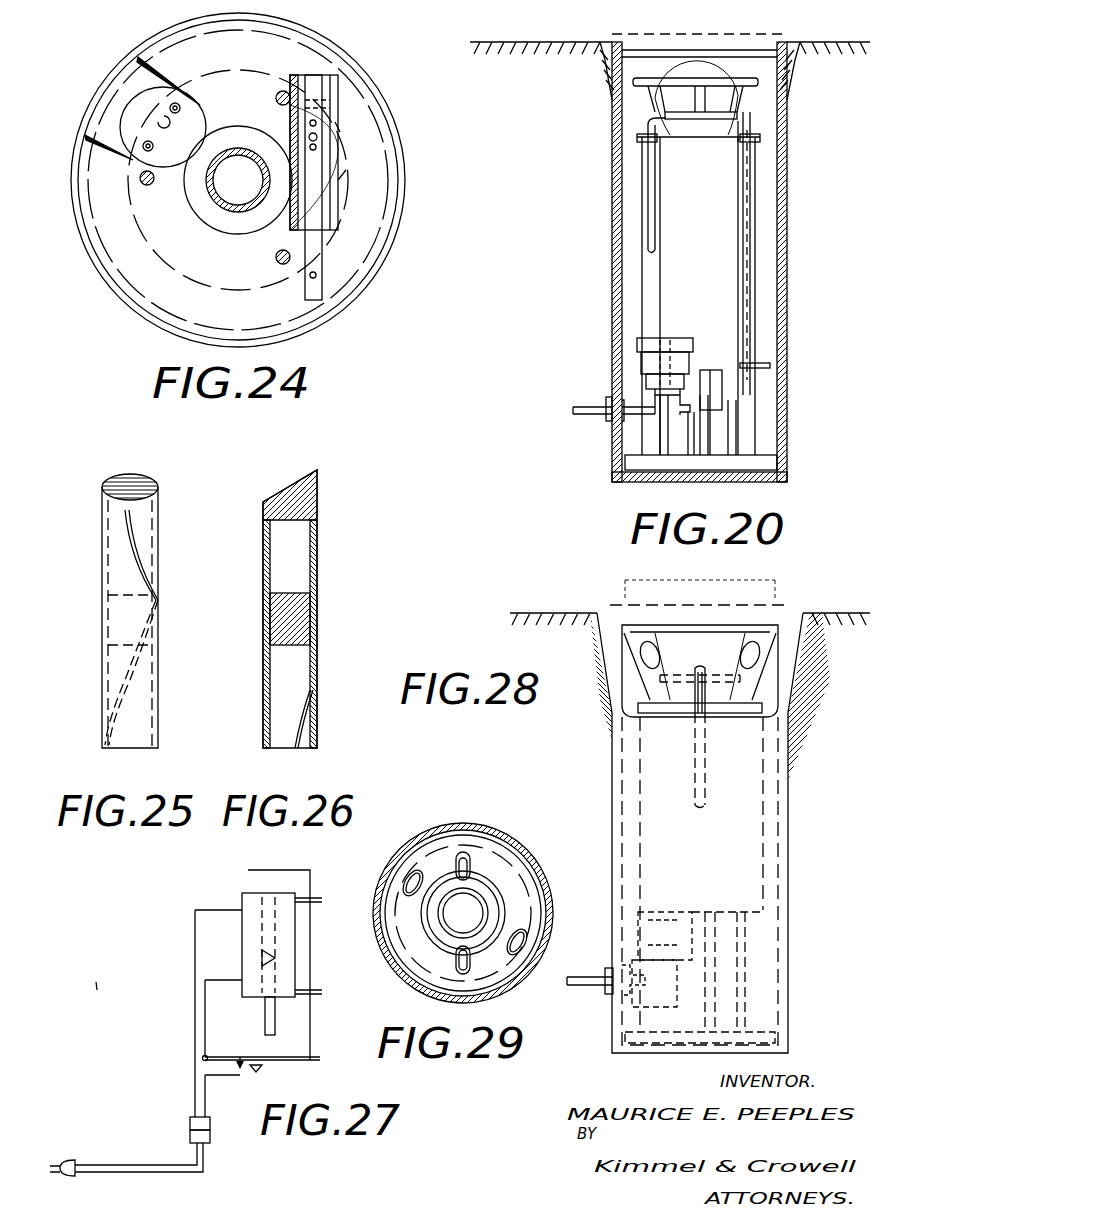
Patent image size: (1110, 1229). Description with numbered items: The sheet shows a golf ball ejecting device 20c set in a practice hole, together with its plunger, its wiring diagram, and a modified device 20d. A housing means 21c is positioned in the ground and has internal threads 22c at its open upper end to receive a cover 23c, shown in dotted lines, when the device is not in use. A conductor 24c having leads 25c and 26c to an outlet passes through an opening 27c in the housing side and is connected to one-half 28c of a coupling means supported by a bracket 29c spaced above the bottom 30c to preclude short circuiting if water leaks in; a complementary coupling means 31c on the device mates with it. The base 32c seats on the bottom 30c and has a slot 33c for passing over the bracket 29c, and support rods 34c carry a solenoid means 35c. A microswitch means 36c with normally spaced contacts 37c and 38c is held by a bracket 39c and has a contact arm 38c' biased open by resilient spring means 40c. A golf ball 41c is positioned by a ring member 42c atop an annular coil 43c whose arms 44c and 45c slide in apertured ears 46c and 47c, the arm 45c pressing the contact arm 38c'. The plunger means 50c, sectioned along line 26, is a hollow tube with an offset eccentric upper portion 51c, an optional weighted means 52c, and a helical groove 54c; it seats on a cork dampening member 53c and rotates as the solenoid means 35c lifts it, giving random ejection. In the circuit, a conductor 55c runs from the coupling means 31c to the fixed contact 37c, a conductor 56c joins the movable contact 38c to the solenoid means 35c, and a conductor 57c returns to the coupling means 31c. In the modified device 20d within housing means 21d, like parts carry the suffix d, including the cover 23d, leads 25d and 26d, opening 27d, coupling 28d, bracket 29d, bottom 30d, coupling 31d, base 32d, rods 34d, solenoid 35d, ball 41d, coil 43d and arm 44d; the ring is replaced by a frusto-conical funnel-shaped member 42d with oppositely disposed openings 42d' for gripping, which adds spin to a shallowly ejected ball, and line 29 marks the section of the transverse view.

In FIG. 20, the device 20c is at (780, 175).
In FIG. 28, the device 20d is at (795, 772).
In FIG. 24, the housing means 21c is at (405, 183).
In FIG. 20, the housing means 21c is at (790, 210).
In FIG. 28, the housing means 21d is at (788, 812).
In FIG. 20, the internal threads 22c is at (770, 48).
In FIG. 20, the cover 23c is at (640, 30).
In FIG. 28, the supply connections 23d is at (560, 985).
In FIG. 20, the conductor 24c is at (585, 400).
In FIG. 20, the lead 25c is at (572, 411).
In FIG. 27, the lead 25c is at (120, 1165).
In FIG. 28, the supply pipe 25d is at (580, 977).
In FIG. 25, the section line 26— 26 is at (130, 470).
In FIG. 20, the lead 26c is at (572, 400).
In FIG. 27, the lead 26c is at (105, 1175).
In FIG. 28, the conduit 26d is at (579, 1021).
In FIG. 20, the opening 27c is at (605, 418).
In FIG. 28, the coupling 27d is at (605, 968).
In FIG. 20, the coupling means half 28c is at (645, 375).
In FIG. 27, the coupling means half 28c is at (190, 1135).
In FIG. 28, the valve 28d is at (680, 925).
In FIG. 28, the section line 29— 29 is at (590, 635).
In FIG. 24, the bracket 29c is at (105, 150).
In FIG. 20, the bracket 29c is at (670, 400).
In FIG. 28, the support post 29d is at (678, 958).
In FIG. 20, the bottom 30c is at (630, 482).
In FIG. 28, the bottom 30d is at (625, 1053).
In FIG. 24, the complementary coupling means 31c is at (190, 112).
In FIG. 20, the complementary coupling means 31c is at (675, 340).
In FIG. 27, the complementary coupling means 31c is at (193, 1117).
In FIG. 28, the pump 31d is at (660, 912).
In FIG. 24, the base 32c is at (300, 52).
In FIG. 20, the base 32c is at (758, 462).
In FIG. 28, the base plate 32d is at (760, 1030).
In FIG. 24, the slot 33c is at (162, 75).
In FIG. 24, the support rods 34c is at (280, 90).
In FIG. 20, the support rods 34c is at (700, 412).
In FIG. 28, the bolt 34d is at (680, 1005).
In FIG. 20, the solenoid means 35c is at (645, 256).
In FIG. 27, the solenoid means 35c is at (242, 932).
In FIG. 28, the tube 35d is at (640, 762).
In FIG. 24, the microswitch means 36c is at (333, 152).
In FIG. 20, the microswitch means 36c is at (722, 400).
In FIG. 27, the contact 37c is at (240, 1075).
In FIG. 24, the contact 38c is at (313, 187).
In FIG. 27, the contact 38c is at (262, 1048).
In FIG. 24, the contact arm 38c' is at (342, 237).
In FIG. 20, the contact arm 38c' is at (785, 358).
In FIG. 27, the contact arm 38c' is at (334, 1039).
In FIG. 24, the bracket 39c is at (340, 100).
In FIG. 24, the resilient spring means 40c is at (335, 158).
In FIG. 27, the resilient spring means 40c is at (265, 1068).
In FIG. 20, the golf ball 41c is at (735, 40).
In FIG. 28, the dome 41d is at (722, 605).
In FIG. 20, the ring member 42c is at (700, 80).
In FIG. 29, the frusto-conical funnel-shaped member 42d is at (463, 903).
In FIG. 28, the frusto-conical funnel-shaped member 42d is at (700, 689).
In FIG. 29, the openings 42d' is at (465, 913).
In FIG. 28, the openings 42d' is at (690, 625).
In FIG. 20, the annular coil 43c is at (655, 142).
In FIG. 27, the annular coil 43c is at (248, 870).
In FIG. 29, the frame 43d is at (495, 885).
In FIG. 28, the frame 43d is at (688, 675).
In FIG. 20, the arm 44c is at (656, 205).
In FIG. 28, the rod 44d is at (708, 775).
In FIG. 24, the arm 45c is at (310, 280).
In FIG. 20, the arm 45c is at (755, 347).
In FIG. 27, the arm 45c is at (312, 880).
In FIG. 20, the apertured ear 46c is at (715, 125).
In FIG. 27, the apertured ear 47c is at (313, 903).
In FIG. 24, the plunger means 50c is at (215, 215).
In FIG. 25, the plunger means 50c is at (102, 538).
In FIG. 26, the plunger means 50c is at (318, 530).
In FIG. 27, the plunger means 50c is at (265, 1003).
In FIG. 25, the offset eccentric upper portion 51c is at (110, 478).
In FIG. 26, the offset eccentric upper portion 51c is at (288, 490).
In FIG. 27, the offset eccentric upper portion 51c is at (262, 955).
In FIG. 25, the weighted means 52c is at (110, 623).
In FIG. 26, the weighted means 52c is at (310, 600).
In FIG. 24, the dampening member 53c is at (235, 235).
In FIG. 24, the helical groove 54c is at (232, 140).
In FIG. 25, the helical groove 54c is at (140, 575).
In FIG. 26, the helical groove 54c is at (270, 545).
In FIG. 27, the conductor 55c is at (205, 1105).
In FIG. 27, the conductor 56c is at (224, 1018).
In FIG. 27, the conductor 57c is at (195, 910).